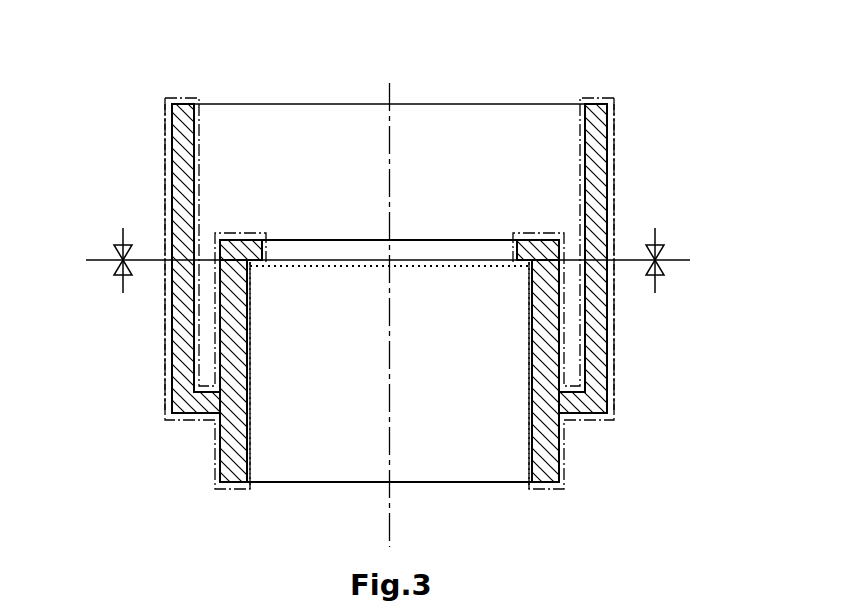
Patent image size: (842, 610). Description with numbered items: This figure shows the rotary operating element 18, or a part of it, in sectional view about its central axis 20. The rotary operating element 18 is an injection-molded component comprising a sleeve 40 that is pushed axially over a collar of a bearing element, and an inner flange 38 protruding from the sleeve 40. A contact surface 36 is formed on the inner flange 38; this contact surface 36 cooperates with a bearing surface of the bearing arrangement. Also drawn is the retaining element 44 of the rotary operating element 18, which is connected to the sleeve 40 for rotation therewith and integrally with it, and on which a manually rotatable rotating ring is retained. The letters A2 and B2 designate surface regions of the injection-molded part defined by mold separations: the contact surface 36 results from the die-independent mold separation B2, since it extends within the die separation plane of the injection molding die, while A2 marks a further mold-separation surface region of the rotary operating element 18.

The rotary operating element 18 is at (242, 78).
The central axis 20 is at (390, 130).
The contact surface 36 is at (258, 268).
The inner flange 38 is at (233, 245).
The sleeve 40 is at (233, 333).
The retaining element 44 is at (595, 213).
The mold separation A2 is at (166, 156).
The die-independent mold separation B2 is at (250, 270).